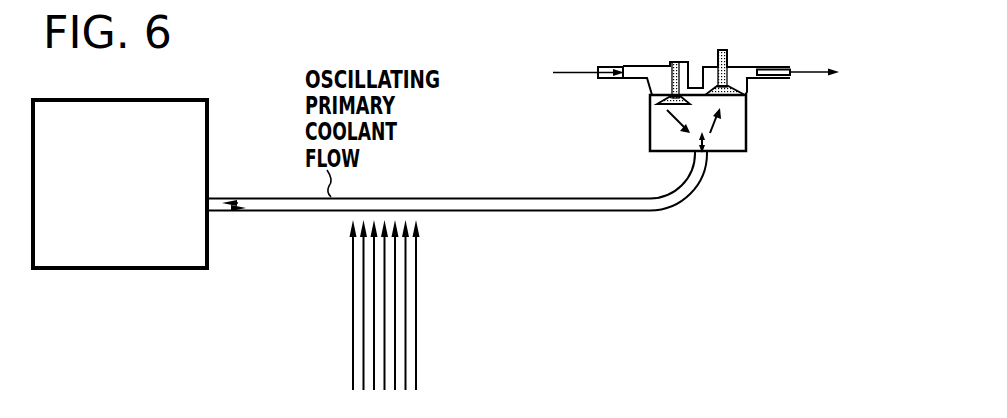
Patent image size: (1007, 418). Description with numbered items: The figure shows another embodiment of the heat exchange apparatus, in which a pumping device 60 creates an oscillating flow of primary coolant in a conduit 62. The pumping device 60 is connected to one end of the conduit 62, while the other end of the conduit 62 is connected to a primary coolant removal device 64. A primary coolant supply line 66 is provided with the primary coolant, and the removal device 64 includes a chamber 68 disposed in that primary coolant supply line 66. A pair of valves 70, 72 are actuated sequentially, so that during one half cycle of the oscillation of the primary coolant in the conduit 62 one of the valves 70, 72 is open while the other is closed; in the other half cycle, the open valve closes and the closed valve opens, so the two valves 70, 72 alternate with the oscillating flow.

The pumping device 60 is at (209, 98).
The conduit 62 is at (492, 197).
The primary coolant removal device 64 is at (773, 147).
The primary coolant supply line 66 is at (604, 79).
The chamber 68 is at (733, 152).
The valve 70 is at (672, 59).
The valve 72 is at (728, 50).